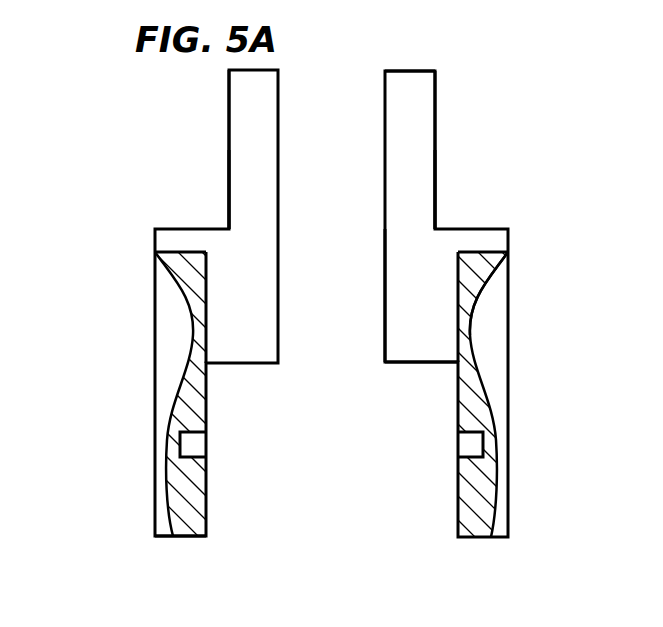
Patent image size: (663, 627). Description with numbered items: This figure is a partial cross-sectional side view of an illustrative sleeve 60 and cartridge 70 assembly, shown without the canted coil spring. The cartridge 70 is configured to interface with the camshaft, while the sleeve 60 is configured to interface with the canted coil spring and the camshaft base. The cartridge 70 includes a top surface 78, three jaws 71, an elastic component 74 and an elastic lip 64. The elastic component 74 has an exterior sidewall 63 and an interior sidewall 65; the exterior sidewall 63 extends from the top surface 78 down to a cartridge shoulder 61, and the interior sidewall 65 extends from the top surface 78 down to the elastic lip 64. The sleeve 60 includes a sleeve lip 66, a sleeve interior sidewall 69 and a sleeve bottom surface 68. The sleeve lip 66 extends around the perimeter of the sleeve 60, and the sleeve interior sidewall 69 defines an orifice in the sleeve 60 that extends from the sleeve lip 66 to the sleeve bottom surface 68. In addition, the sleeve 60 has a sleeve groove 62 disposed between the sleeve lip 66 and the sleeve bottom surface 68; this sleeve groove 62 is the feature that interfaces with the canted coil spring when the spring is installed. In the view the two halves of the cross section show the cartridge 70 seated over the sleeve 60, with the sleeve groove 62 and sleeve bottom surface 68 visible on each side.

The sleeve 60 is at (124, 128).
The cartridge shoulder 61 is at (473, 229).
The sleeve groove 62 is at (483, 447).
The exterior sidewall 63 is at (435, 183).
The elastic lip 64 is at (400, 362).
The interior sidewall 65 is at (385, 272).
The sleeve lip 66 is at (500, 252).
The sleeve bottom surface 68 is at (180, 537).
The sleeve interior sidewall 69 is at (206, 395).
The cartridge 70 is at (240, 165).
The jaws 71 is at (229, 112).
The elastic component 74 is at (418, 140).
The top surface 78 is at (414, 57).